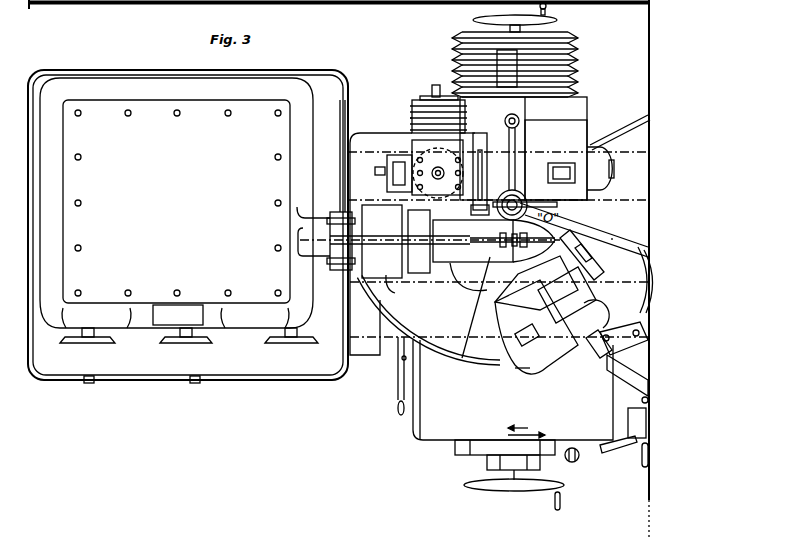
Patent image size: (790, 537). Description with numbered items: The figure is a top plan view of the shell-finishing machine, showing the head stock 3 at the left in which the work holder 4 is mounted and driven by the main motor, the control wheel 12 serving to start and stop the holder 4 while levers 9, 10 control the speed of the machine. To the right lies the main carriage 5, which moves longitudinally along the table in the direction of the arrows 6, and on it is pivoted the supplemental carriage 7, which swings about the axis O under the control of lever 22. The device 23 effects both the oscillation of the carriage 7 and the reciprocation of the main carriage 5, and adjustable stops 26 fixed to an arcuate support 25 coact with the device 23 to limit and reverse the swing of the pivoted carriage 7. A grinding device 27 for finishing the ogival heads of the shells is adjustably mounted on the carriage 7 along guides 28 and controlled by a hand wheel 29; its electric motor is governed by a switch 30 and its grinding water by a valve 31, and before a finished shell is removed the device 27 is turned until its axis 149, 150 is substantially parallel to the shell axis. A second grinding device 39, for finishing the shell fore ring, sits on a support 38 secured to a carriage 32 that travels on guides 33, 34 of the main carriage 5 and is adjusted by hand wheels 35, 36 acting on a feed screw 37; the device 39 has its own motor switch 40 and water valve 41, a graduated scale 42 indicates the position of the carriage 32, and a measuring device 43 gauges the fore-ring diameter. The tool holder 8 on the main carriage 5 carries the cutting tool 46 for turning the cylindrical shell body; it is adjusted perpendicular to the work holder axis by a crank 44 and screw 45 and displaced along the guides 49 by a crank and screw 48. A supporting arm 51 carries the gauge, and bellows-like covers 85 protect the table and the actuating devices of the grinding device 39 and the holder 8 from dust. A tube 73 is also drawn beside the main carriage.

The head stock 3 is at (176, 201).
The work holder 4 is at (396, 291).
The main carriage 5 is at (320, 270).
The arrows 6 is at (526, 423).
The supplemental carriage 7 is at (503, 240).
The tool holder 8 is at (437, 169).
The lever 9 is at (263, 341).
The lever 10 is at (88, 383).
The control wheel 12 is at (97, 343).
The lever 22 is at (640, 395).
The device 23 is at (640, 350).
The arcuate support 25 is at (618, 248).
The adjustable stops 26 is at (592, 320).
The grinding device 27 is at (567, 295).
The guides 28 is at (536, 283).
The hand wheel 29 is at (598, 348).
The switch 30 is at (536, 327).
The valve 31 is at (588, 266).
The carriage 32 is at (474, 121).
The guides 33 is at (567, 35).
The guides 34 is at (466, 33).
The hand wheel 35 is at (547, 17).
The hand wheel 36 is at (467, 484).
The feed screw 37 is at (452, 58).
The support 38 is at (523, 148).
The grinding device 39 is at (600, 168).
The switch 40 is at (561, 173).
The water valve 41 is at (470, 213).
The graduated scale 42 is at (583, 461).
The measuring device 43 is at (512, 115).
The crank 44 is at (436, 86).
The screw 45 is at (416, 100).
The cutting tool 46 is at (419, 241).
The crank and screw 48 is at (376, 171).
The guides 49 is at (398, 157).
The supporting arm 51 is at (390, 229).
The tube 73 is at (400, 382).
The bellows-like covers 85 is at (411, 118).
The axis 149 is at (523, 368).
The axis 150 is at (628, 229).